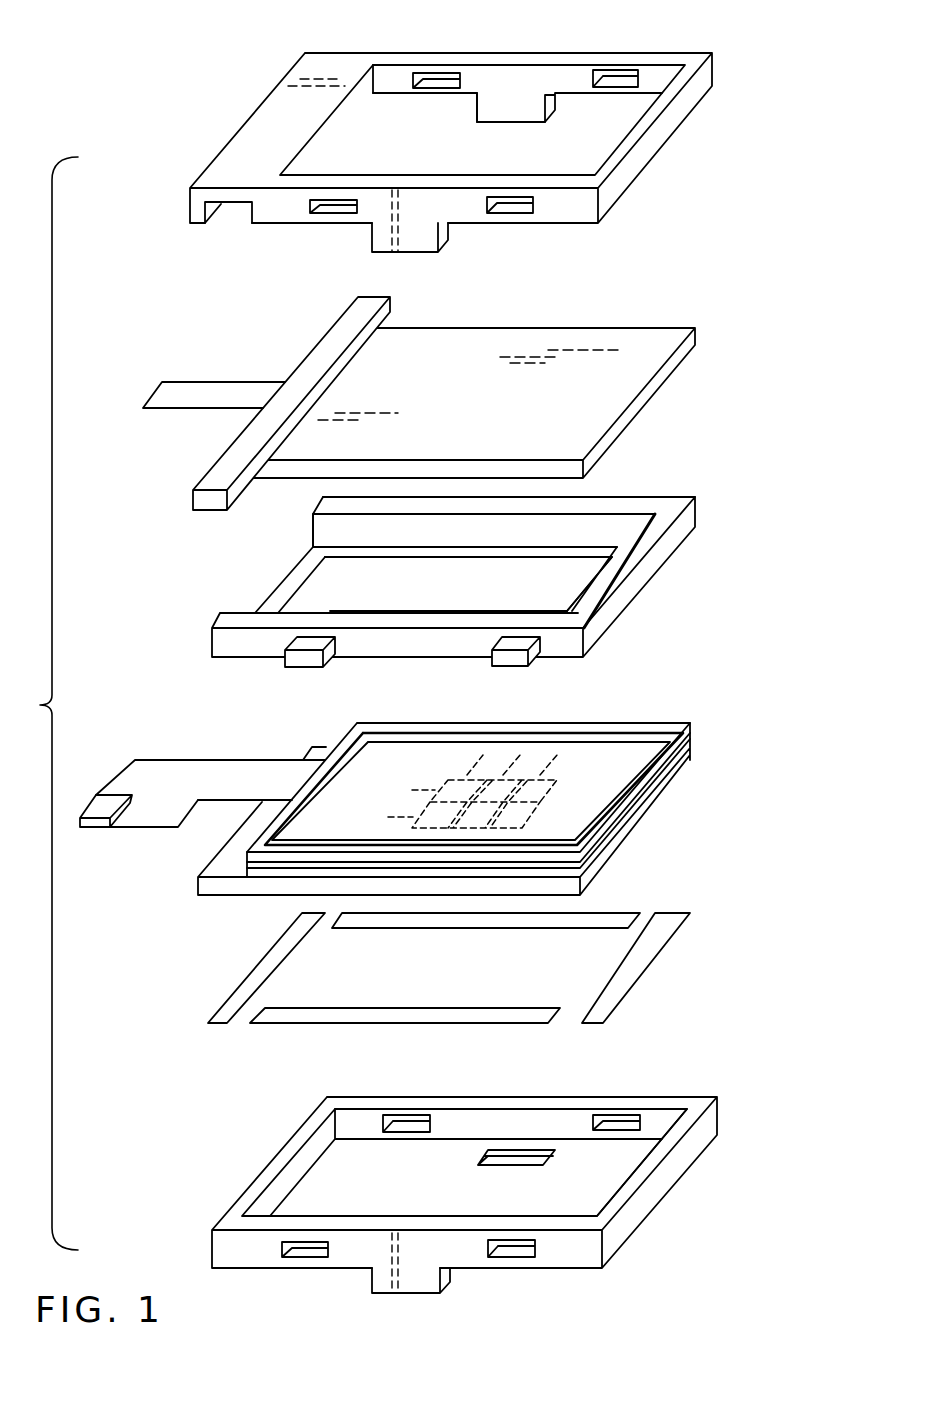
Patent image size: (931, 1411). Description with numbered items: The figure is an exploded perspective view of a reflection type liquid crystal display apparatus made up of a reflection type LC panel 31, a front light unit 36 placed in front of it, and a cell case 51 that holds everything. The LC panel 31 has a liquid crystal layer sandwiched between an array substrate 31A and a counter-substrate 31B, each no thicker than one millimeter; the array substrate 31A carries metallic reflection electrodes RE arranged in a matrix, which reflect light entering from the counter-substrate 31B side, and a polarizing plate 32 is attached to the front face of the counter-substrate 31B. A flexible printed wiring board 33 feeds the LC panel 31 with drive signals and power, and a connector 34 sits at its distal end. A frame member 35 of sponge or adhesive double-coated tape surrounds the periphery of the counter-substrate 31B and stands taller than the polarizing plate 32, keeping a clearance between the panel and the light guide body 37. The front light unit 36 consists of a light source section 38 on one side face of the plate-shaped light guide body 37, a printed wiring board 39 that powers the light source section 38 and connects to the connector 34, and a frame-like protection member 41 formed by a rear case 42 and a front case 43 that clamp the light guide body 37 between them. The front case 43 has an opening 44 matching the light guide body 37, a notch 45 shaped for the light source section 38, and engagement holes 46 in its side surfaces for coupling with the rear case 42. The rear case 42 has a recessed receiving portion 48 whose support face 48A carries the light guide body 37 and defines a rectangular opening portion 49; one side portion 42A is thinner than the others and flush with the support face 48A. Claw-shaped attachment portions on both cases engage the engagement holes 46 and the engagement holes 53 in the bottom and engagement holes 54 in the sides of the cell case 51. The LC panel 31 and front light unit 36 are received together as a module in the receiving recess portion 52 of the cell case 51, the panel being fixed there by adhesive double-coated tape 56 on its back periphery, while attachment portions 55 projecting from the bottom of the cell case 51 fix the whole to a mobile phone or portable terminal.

The reflection type liquid crystal panel 31 is at (660, 797).
The array substrate 31A is at (628, 826).
The counter-substrate 31B is at (640, 812).
The polarizing plate 32 is at (642, 743).
The flexible printed wiring board 33 is at (177, 767).
The connector 34 is at (103, 812).
The frame member 35 is at (640, 722).
The front light unit 36 is at (784, 59).
The light guide body 37 is at (502, 343).
The light source section 38 is at (372, 297).
The printed wiring board 39 is at (182, 400).
The protection member 41 is at (720, 84).
The rear case 42 is at (643, 575).
The side portion of rear case 42A is at (277, 598).
The front case 43 is at (647, 155).
The opening 44 is at (373, 65).
The notch 45 is at (250, 224).
The engagement holes 46 is at (452, 71).
The receiving portion 48 is at (325, 556).
The support face 48A is at (542, 553).
The opening portion 49 is at (565, 583).
The cell case 51 is at (683, 1160).
The receiving recess portion 52 is at (687, 1106).
The engagement holes 53 is at (550, 1150).
The engagement holes 54 is at (285, 1258).
The attachment portions 55 is at (407, 1290).
The adhesive double-coated tape 56 is at (660, 915).
The reflection electrodes RE is at (523, 822).